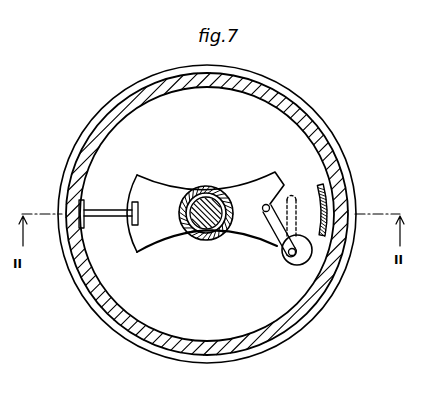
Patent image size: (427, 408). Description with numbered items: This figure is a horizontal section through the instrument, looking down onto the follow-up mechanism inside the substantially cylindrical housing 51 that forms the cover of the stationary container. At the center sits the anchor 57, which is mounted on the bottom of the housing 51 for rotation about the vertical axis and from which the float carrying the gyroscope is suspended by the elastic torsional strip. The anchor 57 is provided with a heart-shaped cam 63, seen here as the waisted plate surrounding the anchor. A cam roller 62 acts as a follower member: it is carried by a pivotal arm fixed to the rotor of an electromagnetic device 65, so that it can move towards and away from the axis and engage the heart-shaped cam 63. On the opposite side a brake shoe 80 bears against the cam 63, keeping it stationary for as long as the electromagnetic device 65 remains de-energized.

The housing 51 is at (310, 124).
The anchor 57 is at (203, 230).
The cam roller 62 is at (280, 186).
The heart-shaped cam 63 is at (147, 188).
The electromagnetic device 65 is at (282, 257).
The brake shoe 80 is at (133, 226).